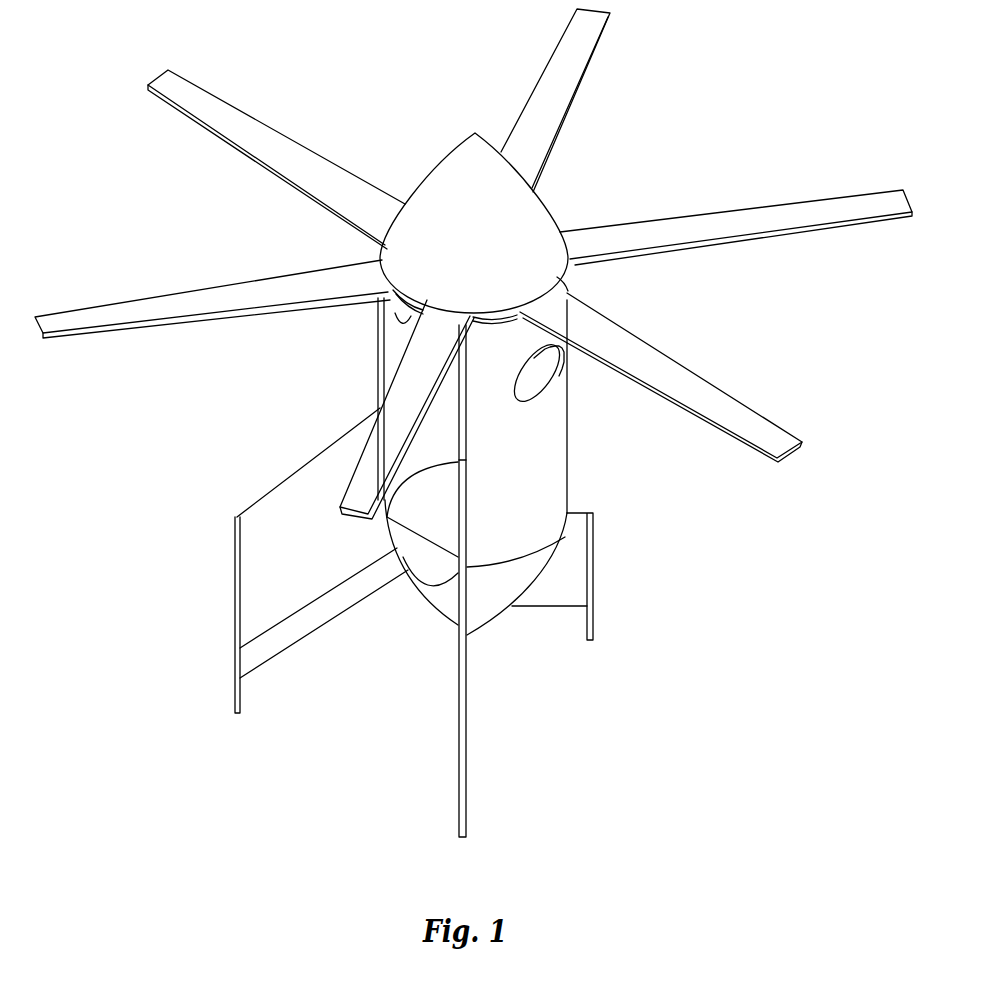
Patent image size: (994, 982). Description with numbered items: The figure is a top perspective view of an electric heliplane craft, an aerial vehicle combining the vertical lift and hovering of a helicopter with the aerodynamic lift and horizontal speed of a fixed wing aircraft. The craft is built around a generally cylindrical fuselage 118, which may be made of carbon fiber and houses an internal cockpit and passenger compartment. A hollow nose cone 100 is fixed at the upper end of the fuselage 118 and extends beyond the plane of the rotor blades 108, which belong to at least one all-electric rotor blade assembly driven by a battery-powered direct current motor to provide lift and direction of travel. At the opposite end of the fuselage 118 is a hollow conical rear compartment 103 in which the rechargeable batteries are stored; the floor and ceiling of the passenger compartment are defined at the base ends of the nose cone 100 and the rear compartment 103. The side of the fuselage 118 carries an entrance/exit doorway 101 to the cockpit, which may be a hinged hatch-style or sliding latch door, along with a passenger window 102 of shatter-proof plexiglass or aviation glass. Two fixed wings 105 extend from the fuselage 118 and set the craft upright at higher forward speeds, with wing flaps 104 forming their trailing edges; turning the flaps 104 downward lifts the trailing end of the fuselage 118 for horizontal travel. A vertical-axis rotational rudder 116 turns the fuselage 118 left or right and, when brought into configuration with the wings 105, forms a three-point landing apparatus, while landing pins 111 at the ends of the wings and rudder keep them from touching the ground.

The nose cone 100 is at (433, 162).
The doorway 101 is at (452, 422).
The passenger window 102 is at (517, 378).
The rear compartment 103 is at (490, 622).
The wing flap 104 is at (337, 615).
The fixed wing 105 is at (317, 465).
The rotor blade 108 is at (700, 253).
The landing pin 111 is at (240, 695).
The vertical rudder 116 is at (593, 565).
The fuselage 118 is at (567, 415).